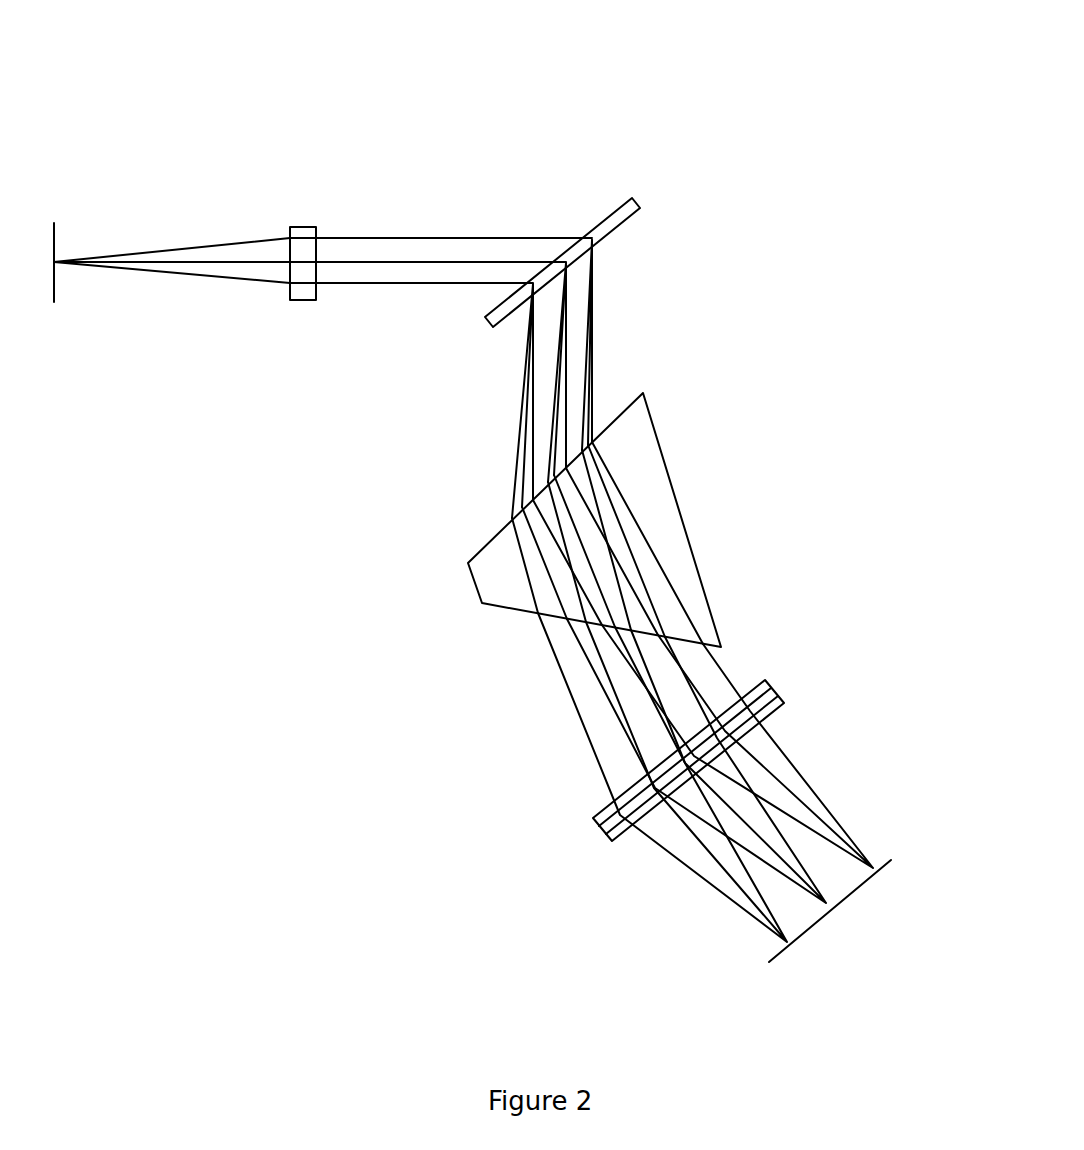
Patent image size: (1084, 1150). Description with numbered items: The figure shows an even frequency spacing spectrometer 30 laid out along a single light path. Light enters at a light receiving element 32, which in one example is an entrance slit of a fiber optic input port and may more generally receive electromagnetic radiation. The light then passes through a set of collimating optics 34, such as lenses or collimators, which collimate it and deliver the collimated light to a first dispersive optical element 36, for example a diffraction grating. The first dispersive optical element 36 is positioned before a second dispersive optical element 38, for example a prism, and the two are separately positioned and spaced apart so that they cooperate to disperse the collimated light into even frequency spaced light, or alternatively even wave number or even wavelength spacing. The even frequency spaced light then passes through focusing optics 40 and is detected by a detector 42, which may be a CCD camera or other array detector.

The even frequency spacing spectrometer 30 is at (788, 137).
The light receiving element 32 is at (55, 213).
The collimating optics 34 is at (302, 218).
The first dispersive optical element 36 is at (605, 200).
The second dispersive optical element 38 is at (668, 453).
The focusing optics 40 is at (767, 680).
The detector 42 is at (891, 860).